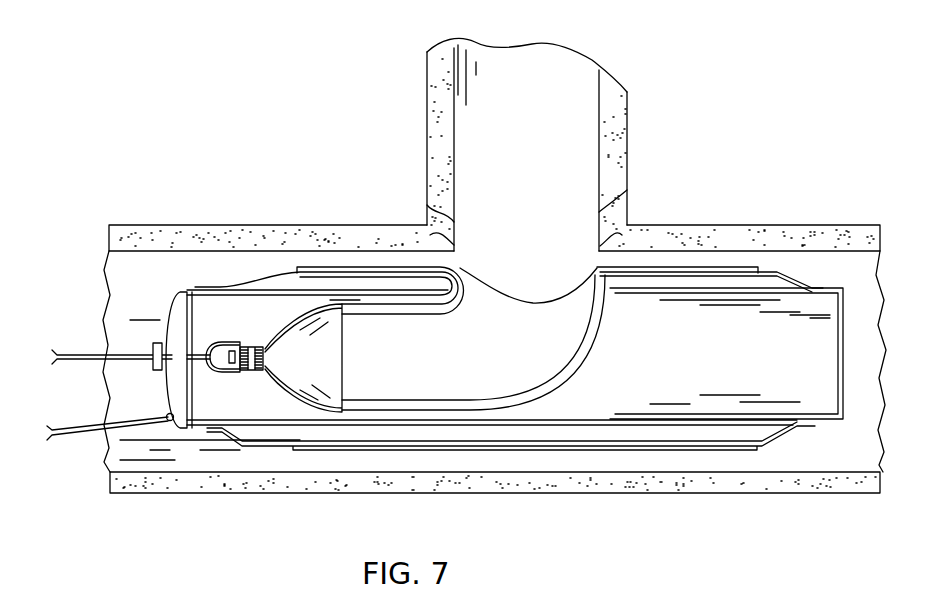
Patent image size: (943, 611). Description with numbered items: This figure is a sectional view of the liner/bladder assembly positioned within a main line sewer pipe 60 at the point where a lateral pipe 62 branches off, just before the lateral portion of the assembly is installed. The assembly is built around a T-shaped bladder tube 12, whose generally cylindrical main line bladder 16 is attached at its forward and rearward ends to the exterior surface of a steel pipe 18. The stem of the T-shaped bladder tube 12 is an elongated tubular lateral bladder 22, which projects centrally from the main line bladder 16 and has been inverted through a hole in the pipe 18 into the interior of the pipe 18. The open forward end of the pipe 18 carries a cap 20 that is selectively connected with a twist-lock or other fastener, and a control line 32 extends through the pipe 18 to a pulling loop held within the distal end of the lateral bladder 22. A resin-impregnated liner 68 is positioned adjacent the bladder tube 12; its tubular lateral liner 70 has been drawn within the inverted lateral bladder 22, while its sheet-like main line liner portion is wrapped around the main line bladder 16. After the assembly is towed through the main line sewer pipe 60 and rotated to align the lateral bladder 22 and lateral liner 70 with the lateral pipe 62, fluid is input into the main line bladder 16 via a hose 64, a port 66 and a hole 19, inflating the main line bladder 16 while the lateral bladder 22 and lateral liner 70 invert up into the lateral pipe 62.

The T-shaped bladder tube 12 is at (272, 268).
The main line bladder 16 is at (662, 447).
The steel pipe 18 is at (552, 425).
The hole 19 is at (285, 292).
The cap 20 is at (177, 313).
The lateral bladder 22 is at (603, 333).
The control line 32 is at (123, 363).
The main line sewer pipe 60 is at (762, 230).
The lateral pipe 62 is at (627, 128).
The hose 64 is at (88, 430).
The port 66 is at (177, 428).
The liner 68 is at (572, 283).
The lateral liner 70 is at (551, 372).